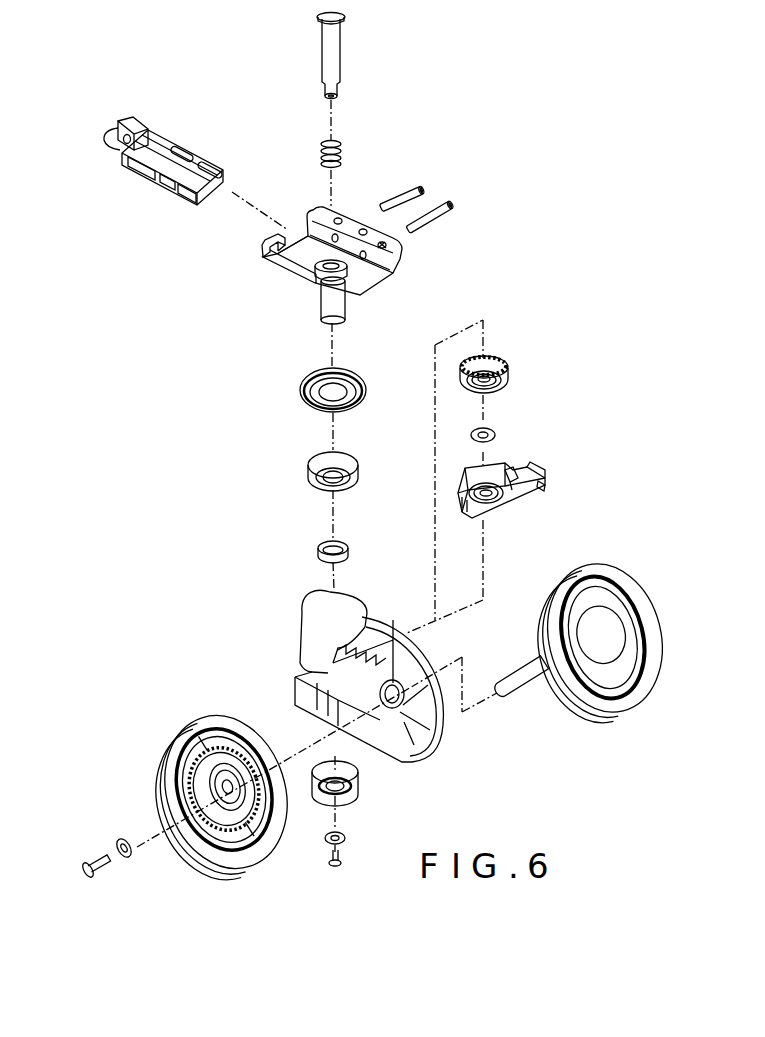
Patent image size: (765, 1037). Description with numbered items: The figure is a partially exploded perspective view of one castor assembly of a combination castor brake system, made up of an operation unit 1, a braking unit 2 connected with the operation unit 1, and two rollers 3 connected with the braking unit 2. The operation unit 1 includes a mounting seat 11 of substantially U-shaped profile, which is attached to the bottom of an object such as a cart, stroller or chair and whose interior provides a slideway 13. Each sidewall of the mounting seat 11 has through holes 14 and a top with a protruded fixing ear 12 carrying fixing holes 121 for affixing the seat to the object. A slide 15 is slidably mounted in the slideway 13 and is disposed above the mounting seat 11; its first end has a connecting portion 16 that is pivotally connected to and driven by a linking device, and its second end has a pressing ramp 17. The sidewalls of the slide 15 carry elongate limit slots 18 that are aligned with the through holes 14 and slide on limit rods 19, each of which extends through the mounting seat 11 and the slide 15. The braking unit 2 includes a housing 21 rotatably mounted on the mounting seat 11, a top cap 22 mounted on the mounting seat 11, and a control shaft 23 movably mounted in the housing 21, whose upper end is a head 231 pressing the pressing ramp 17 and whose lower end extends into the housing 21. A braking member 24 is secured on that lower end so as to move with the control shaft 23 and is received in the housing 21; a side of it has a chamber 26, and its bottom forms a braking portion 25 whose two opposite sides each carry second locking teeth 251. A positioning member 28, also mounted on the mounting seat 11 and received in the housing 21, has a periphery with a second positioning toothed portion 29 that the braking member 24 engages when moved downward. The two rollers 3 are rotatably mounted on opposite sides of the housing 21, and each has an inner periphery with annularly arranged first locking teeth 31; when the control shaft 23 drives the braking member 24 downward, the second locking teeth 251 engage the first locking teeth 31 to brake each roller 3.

The operation unit 1 is at (523, 195).
The braking unit 2 is at (246, 509).
The roller 3 is at (160, 768).
The mounting seat 11 is at (300, 263).
The fixing ear 12 is at (401, 246).
The fixing hole 121 is at (384, 247).
The slideway 13 is at (293, 225).
The through hole 14 is at (362, 262).
The slide 15 is at (160, 136).
The connecting portion 16 is at (113, 128).
The pressing ramp 17 is at (167, 181).
The limit slot 18 is at (204, 163).
The limit rod 19 is at (422, 188).
The housing 21 is at (308, 625).
The top cap 22 is at (300, 392).
The control shaft 23 is at (336, 65).
The head 231 is at (345, 17).
The braking member 24 is at (507, 502).
The braking portion 25 is at (531, 468).
The second locking teeth 251 is at (542, 487).
The chamber 26 is at (506, 466).
The positioning member 28 is at (510, 380).
The second positioning toothed portion 29 is at (497, 358).
The first locking teeth 31 is at (195, 770).